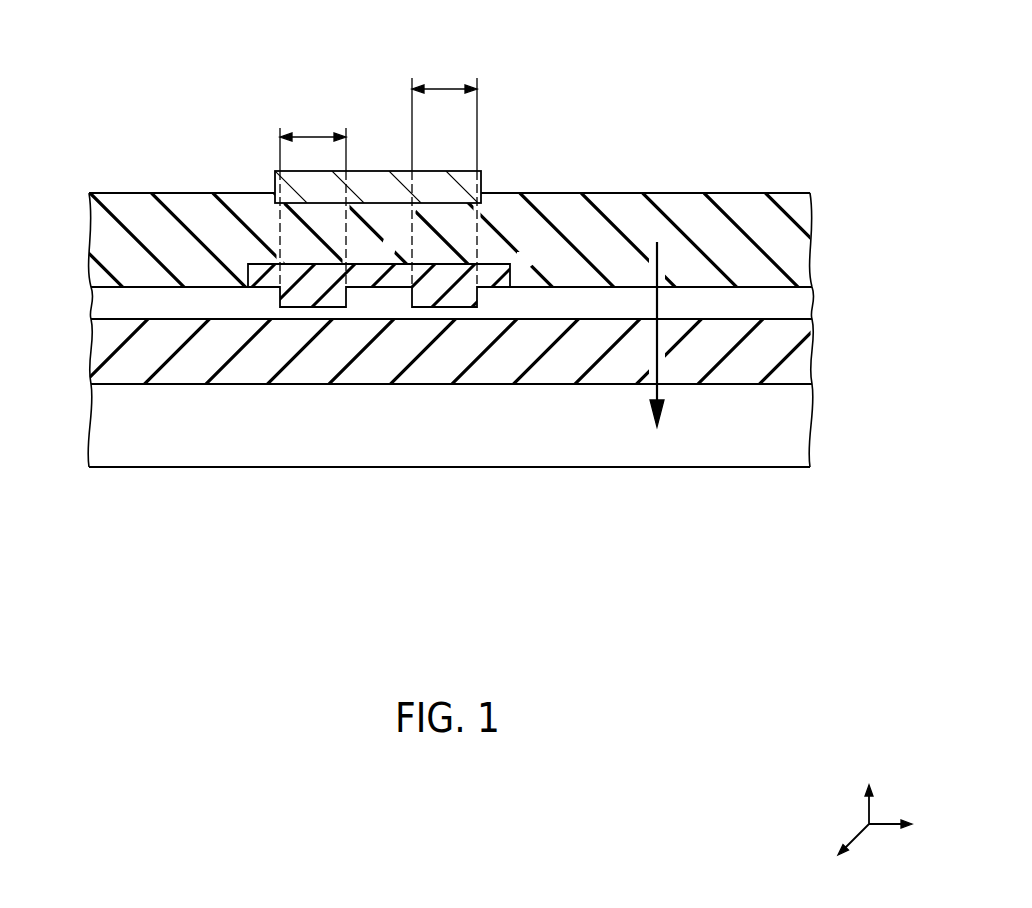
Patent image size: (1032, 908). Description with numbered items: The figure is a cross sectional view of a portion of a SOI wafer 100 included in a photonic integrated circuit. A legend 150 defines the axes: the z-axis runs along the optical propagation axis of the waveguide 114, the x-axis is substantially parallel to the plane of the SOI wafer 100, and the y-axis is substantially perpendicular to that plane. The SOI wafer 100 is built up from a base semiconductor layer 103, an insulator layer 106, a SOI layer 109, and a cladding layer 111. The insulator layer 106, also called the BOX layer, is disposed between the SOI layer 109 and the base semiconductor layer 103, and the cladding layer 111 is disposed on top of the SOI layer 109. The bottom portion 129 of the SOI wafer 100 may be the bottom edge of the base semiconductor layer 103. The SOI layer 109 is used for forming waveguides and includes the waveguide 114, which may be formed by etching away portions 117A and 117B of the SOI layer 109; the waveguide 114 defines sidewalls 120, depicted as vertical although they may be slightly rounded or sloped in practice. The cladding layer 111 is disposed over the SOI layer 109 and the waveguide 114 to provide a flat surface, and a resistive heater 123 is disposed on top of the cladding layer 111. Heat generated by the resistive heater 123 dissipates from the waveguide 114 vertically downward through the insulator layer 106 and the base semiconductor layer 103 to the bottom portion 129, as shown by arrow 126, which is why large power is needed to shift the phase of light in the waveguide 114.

The SOI wafer 100 is at (160, 85).
The base semiconductor layer 103 is at (90, 428).
The insulator layer 106 is at (93, 346).
The SOI layer 109 is at (93, 307).
The cladding layer 111 is at (93, 228).
The waveguide 114 is at (384, 288).
The etched-away portion of the SOI layer 117A is at (315, 137).
The etched-away portion of the SOI layer 117B is at (447, 88).
The sidewalls 120 is at (477, 307).
The resistive heater 123 is at (367, 180).
The arrow 126 is at (667, 397).
The bottom portion 129 is at (690, 468).
The legend 150 is at (882, 728).